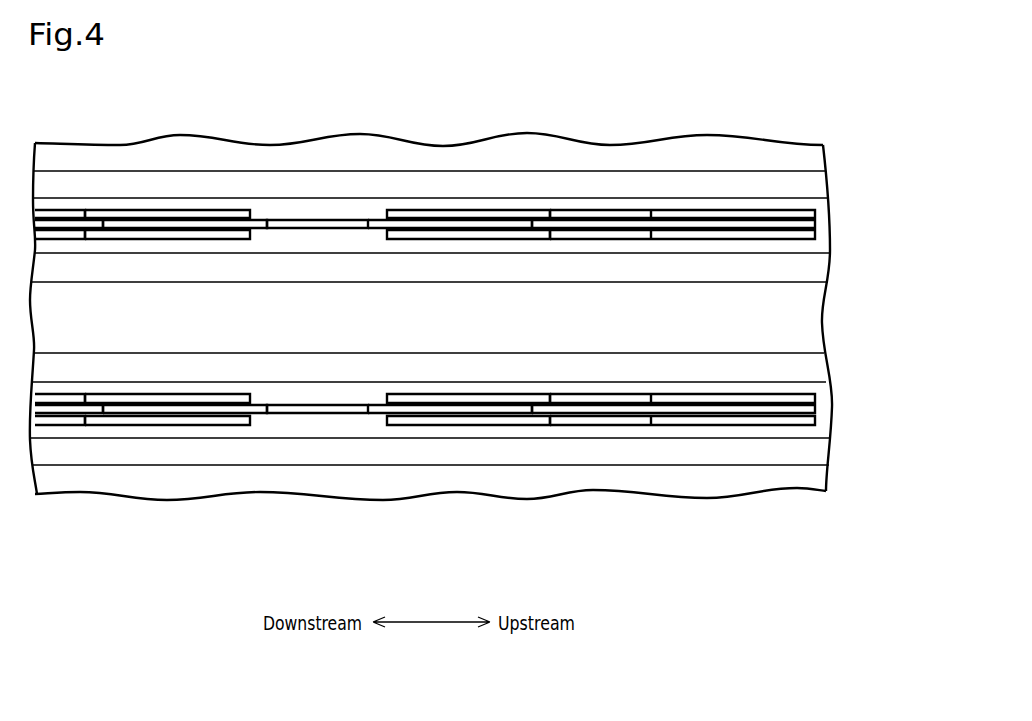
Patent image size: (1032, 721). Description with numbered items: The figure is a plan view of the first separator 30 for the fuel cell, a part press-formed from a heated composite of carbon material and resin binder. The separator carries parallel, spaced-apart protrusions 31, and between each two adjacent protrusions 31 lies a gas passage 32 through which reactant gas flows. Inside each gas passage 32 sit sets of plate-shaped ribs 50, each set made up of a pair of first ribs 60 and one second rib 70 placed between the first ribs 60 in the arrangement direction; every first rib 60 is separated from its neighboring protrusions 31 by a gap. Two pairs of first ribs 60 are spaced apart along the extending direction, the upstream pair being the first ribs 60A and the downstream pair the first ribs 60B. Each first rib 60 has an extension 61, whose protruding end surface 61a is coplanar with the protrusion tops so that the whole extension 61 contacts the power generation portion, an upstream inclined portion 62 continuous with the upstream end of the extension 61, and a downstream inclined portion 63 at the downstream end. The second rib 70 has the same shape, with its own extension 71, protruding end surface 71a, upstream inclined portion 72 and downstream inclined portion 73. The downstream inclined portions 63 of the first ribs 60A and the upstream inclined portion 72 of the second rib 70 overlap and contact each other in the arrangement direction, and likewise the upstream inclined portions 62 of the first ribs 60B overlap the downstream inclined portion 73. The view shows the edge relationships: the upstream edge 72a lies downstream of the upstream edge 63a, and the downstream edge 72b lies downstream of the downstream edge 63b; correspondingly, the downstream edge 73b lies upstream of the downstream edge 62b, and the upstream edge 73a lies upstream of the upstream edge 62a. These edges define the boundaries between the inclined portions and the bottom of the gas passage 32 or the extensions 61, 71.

The first separator 30 is at (817, 79).
The protrusions 31 is at (815, 156).
The gas passages 32 is at (825, 224).
The ribs 50 is at (425, 350).
The first ribs 60 is at (425, 350).
The first ribs on the upstream side 60A is at (621, 210).
The first ribs on the downstream side 60B is at (72, 210).
The extension 61 is at (53, 400).
The protruding end surface 61a is at (68, 420).
The upstream inclined portion 62 is at (163, 420).
The upstream edge 62a is at (250, 420).
The downstream edge 62b is at (93, 418).
The downstream inclined portion 63 is at (508, 420).
The upstream edge 63a is at (546, 422).
The downstream edge 63b is at (380, 425).
The second rib 70 is at (318, 220).
The extension 71 is at (280, 407).
The protruding end surface 71a is at (347, 407).
The upstream inclined portion 72 is at (450, 407).
The upstream edge 72a is at (532, 410).
The downstream edge 72b is at (370, 413).
The downstream inclined portion 73 is at (228, 407).
The upstream edge 73a is at (262, 413).
The downstream edge 73b is at (101, 406).